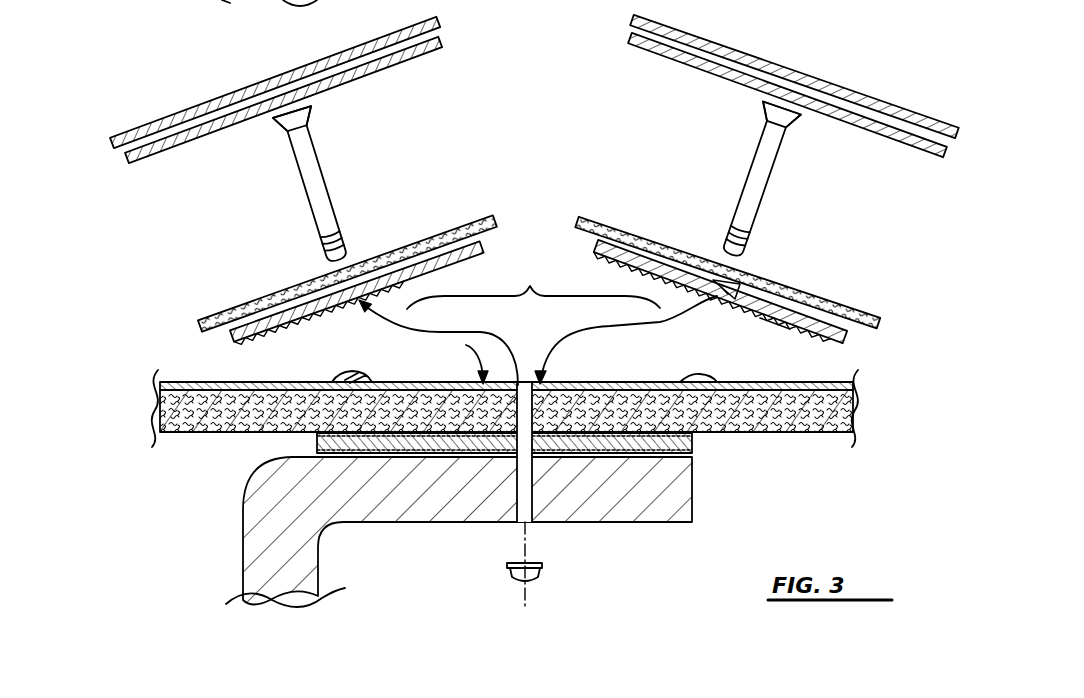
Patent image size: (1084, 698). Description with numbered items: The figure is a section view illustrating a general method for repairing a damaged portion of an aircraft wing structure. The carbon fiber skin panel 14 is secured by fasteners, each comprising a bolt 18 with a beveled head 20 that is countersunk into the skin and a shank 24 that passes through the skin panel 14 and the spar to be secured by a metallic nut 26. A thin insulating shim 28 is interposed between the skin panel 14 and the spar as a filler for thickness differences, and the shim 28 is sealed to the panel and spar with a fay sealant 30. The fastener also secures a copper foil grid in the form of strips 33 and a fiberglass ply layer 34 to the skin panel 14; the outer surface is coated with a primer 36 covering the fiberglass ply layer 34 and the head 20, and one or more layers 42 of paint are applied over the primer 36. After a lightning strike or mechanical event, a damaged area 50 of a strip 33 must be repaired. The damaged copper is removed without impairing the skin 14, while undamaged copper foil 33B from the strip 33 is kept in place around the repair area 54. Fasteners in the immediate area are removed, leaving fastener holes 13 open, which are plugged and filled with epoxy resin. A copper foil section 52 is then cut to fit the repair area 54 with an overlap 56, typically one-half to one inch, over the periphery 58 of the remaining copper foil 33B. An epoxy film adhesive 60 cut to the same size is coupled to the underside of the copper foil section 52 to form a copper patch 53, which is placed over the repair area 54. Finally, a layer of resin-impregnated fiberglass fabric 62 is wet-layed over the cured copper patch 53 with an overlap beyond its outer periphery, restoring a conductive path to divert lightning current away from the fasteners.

The fastener hole 13 is at (530, 383).
The skin panel 14 is at (158, 418).
The bolt 18 is at (292, 160).
The beveled head 20 is at (308, 118).
The shank 24 is at (322, 200).
The nut 26 is at (540, 578).
The shim 28 is at (693, 440).
The fay sealant 30 is at (317, 450).
The strip 33 is at (303, 320).
The undamaged copper foil 33B is at (404, 363).
The fiberglass ply layer 34 is at (195, 326).
The primer 36 is at (127, 153).
The layer of paint 42 is at (112, 141).
The damaged area 50 is at (538, 323).
The copper foil section 52 is at (814, 312).
The copper patch 53 is at (590, 238).
The repair area 54 is at (462, 362).
The overlap 56 is at (847, 334).
The periphery 58 is at (347, 372).
The epoxy film adhesive 60 is at (775, 323).
The resin-impregnated fiberglass fabric 62 is at (598, 220).